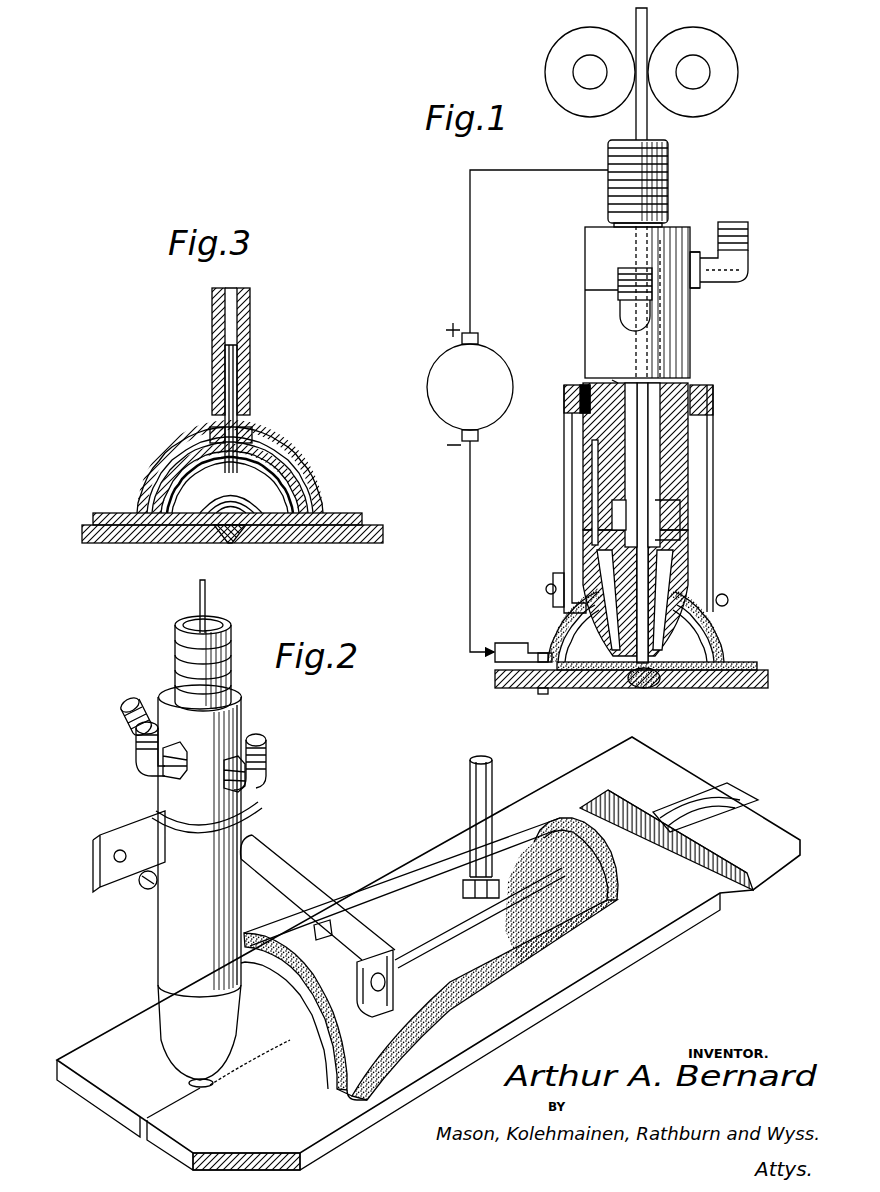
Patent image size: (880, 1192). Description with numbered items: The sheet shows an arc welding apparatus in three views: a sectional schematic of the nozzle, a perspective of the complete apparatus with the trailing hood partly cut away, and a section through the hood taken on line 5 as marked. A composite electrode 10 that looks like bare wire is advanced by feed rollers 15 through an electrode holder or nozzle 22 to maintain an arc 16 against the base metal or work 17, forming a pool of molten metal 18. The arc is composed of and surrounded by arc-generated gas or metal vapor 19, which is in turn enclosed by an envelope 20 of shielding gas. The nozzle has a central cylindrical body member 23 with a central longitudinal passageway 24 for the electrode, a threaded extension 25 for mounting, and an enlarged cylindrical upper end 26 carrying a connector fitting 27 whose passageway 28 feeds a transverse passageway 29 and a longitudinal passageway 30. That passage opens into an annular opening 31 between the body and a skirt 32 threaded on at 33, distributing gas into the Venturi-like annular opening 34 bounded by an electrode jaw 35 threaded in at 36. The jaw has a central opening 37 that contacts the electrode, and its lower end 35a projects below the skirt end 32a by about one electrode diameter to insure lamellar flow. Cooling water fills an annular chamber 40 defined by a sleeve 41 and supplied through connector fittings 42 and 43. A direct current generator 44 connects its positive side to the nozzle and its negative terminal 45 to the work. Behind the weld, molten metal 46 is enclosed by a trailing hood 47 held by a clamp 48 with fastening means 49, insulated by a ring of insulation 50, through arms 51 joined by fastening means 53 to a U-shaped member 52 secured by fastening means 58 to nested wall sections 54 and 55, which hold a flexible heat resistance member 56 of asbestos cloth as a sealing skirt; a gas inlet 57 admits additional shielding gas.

In FIG. 1, the section line 5- 5 is at (669, 14).
In FIG. 1, the composite electrode 10 is at (650, 126).
In FIG. 2, the composite electrode 10 is at (200, 600).
In FIG. 1, the feed rollers 15 is at (553, 60).
In FIG. 1, the arc 16 is at (640, 688).
In FIG. 2, the arc 16 is at (190, 1090).
In FIG. 1, the base metal 17 is at (766, 689).
In FIG. 2, the base metal 17 is at (675, 932).
In FIG. 3, the base metal 17 is at (320, 543).
In FIG. 1, the pool of molten metal 18 is at (648, 688).
In FIG. 1, the arc-generated gas or metal vapor 19 is at (620, 664).
In FIG. 1, the envelope of shielding gas 20 is at (600, 664).
In FIG. 2, the envelope of shielding gas 20 is at (186, 1080).
In FIG. 1, the electrode holder or nozzle 22 is at (694, 362).
In FIG. 2, the electrode holder or nozzle 22 is at (156, 930).
In FIG. 1, the central cylindrical body member 23 is at (600, 457).
In FIG. 1, the central longitudinal passageway 24 is at (614, 382).
In FIG. 1, the threaded extension 25 is at (670, 169).
In FIG. 2, the threaded extension 25 is at (235, 657).
In FIG. 1, the enlarged cylindrical upper end 26 is at (690, 236).
In FIG. 2, the enlarged cylindrical upper end 26 is at (250, 720).
In FIG. 1, the connector fitting 27 is at (750, 264).
In FIG. 2, the connector fitting 27 is at (135, 770).
In FIG. 1, the passageway 28 is at (736, 279).
In FIG. 1, the transverse passageway 29 is at (696, 290).
In FIG. 1, the longitudinal passageway 30 is at (698, 320).
In FIG. 1, the annular opening 31 is at (668, 560).
In FIG. 1, the skirt 32 is at (690, 582).
In FIG. 1, the lower end of skirt 32a is at (714, 650).
In FIG. 1, the threads 33 is at (662, 508).
In FIG. 1, the annular opening 34 is at (655, 578).
In FIG. 1, the electrode jaw 35 is at (712, 640).
In FIG. 1, the lower end of electrode jaw 35a is at (690, 688).
In FIG. 2, the lower end of electrode jaw 35a is at (220, 1096).
In FIG. 1, the threads 36 is at (612, 535).
In FIG. 1, the central longitudinal opening 37 is at (625, 572).
In FIG. 1, the annular chamber 40 is at (600, 478).
In FIG. 1, the sleeve 41 is at (592, 440).
In FIG. 1, the connector fitting 42 is at (620, 310).
In FIG. 2, the connector fitting 42 is at (141, 700).
In FIG. 2, the connector fitting 43 is at (268, 779).
In FIG. 1, the generator 44 is at (452, 372).
In FIG. 1, the negative terminal 45 is at (510, 643).
In FIG. 2, the pool of molten metal 46 is at (236, 1086).
In FIG. 3, the pool of molten metal 46 is at (248, 510).
In FIG. 1, the trailing hood 47 is at (553, 628).
In FIG. 2, the trailing hood 47 is at (392, 905).
In FIG. 1, the clamp 48 is at (714, 406).
In FIG. 2, the clamp 48 is at (265, 822).
In FIG. 2, the fastening means 49 is at (140, 895).
In FIG. 1, the ring of insulation 50 is at (714, 390).
In FIG. 2, the ring of insulation 50 is at (150, 802).
In FIG. 1, the arms 51 is at (714, 462).
In FIG. 2, the arms 51 is at (290, 872).
In FIG. 1, the U-shaped member 52 is at (728, 612).
In FIG. 2, the U-shaped member 52 is at (410, 978).
In FIG. 1, the fastening means 53 is at (546, 589).
In FIG. 2, the fastening means 53 is at (392, 968).
In FIG. 2, the wall section 54 is at (530, 955).
In FIG. 3, the wall section 54 is at (276, 456).
In FIG. 2, the wall section 55 is at (318, 1080).
In FIG. 3, the wall section 55 is at (200, 455).
In FIG. 1, the flexible heat resistance member 56 is at (757, 670).
In FIG. 2, the flexible heat resistance member 56 is at (284, 1025).
In FIG. 3, the flexible heat resistance member 56 is at (292, 492).
In FIG. 2, the gas inlet 57 is at (470, 802).
In FIG. 3, the gas inlet 57 is at (252, 342).
In FIG. 2, the fastening means 58 is at (331, 932).